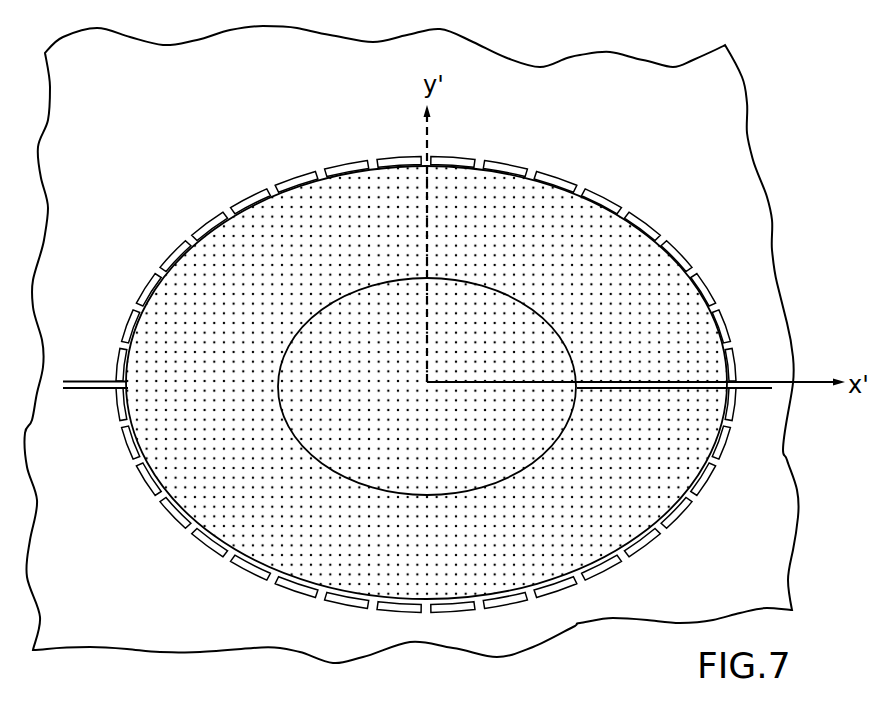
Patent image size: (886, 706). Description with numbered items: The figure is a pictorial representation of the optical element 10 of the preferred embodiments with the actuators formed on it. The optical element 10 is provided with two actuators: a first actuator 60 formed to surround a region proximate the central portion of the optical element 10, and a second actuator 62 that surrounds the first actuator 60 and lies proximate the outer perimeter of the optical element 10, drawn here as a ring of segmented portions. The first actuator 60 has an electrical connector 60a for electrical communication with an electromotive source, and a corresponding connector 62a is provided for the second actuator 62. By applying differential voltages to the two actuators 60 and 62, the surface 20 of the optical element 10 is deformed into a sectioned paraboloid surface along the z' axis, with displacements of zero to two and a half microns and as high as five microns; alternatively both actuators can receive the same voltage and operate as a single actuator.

The optical element 10 is at (204, 190).
The surface 20 is at (572, 263).
The first actuator 60 is at (430, 410).
The electrical connector 60a is at (671, 393).
The second actuator 62 is at (238, 286).
The connector 62a is at (87, 378).